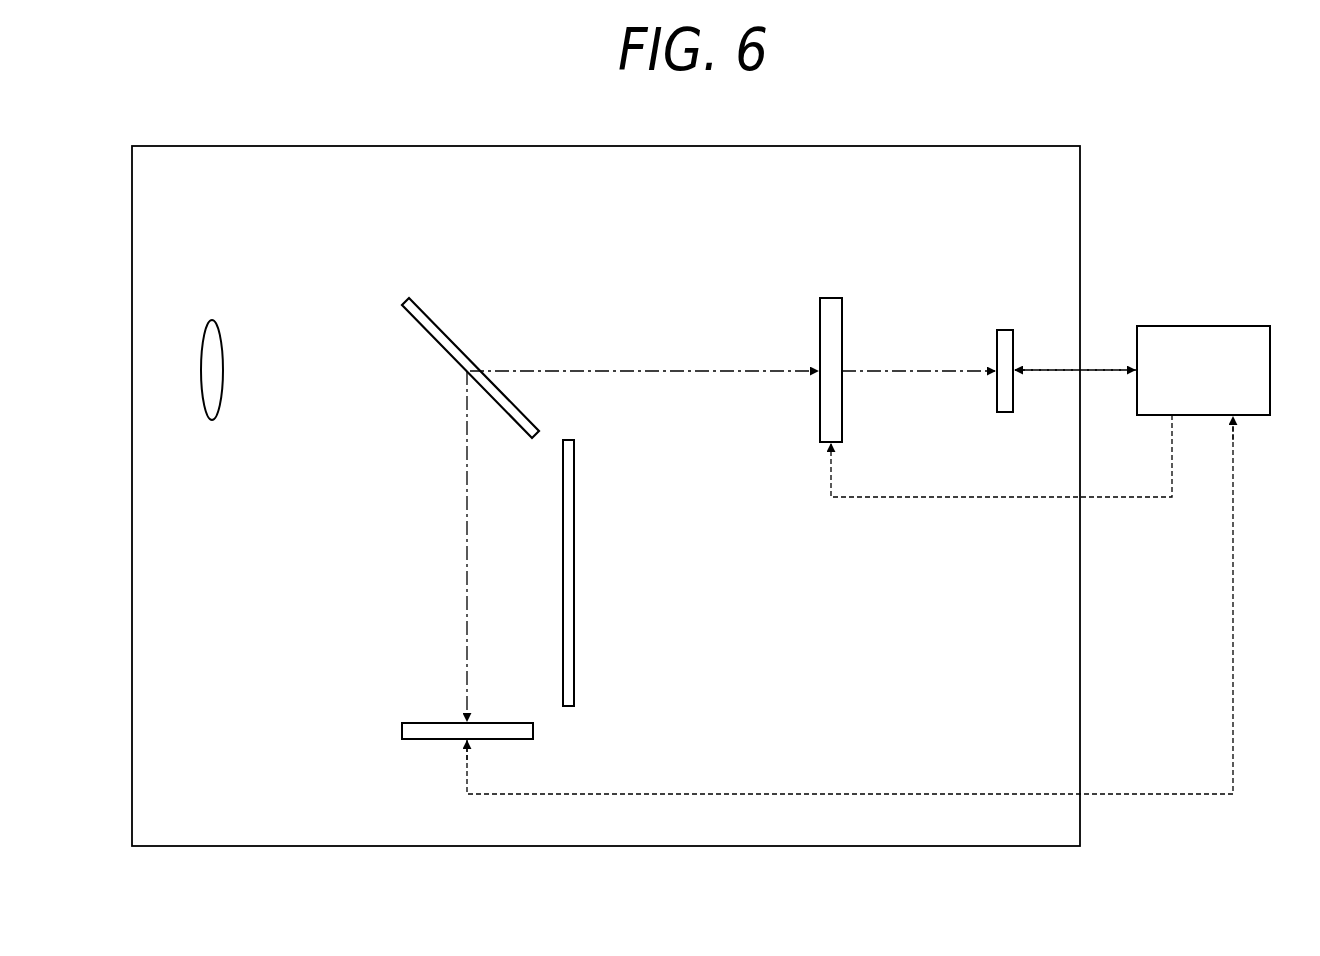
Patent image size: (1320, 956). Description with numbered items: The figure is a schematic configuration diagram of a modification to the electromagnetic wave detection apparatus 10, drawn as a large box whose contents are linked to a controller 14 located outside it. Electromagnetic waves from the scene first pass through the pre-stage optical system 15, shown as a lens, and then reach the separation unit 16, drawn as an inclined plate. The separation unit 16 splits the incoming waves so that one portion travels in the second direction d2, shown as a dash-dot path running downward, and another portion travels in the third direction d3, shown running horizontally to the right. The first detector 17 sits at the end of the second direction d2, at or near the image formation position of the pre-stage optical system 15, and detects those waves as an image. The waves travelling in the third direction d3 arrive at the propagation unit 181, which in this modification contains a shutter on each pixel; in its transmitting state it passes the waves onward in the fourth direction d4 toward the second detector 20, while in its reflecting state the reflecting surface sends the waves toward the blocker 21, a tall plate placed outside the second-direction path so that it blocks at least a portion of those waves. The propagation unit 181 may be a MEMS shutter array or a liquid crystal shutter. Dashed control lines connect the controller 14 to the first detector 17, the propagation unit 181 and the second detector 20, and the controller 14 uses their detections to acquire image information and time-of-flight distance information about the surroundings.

The electromagnetic wave detection apparatus 10 is at (237, 142).
The controller 14 is at (1203, 324).
The pre-stage optical system 15 is at (212, 320).
The separation unit 16 is at (421, 303).
The first detector 17 is at (534, 731).
The propagation unit 181 is at (828, 296).
The second detector 20 is at (1004, 328).
The blocker 21 is at (576, 547).
The second direction d2 is at (467, 566).
The third direction d3 is at (637, 368).
The fourth direction d4 is at (914, 368).